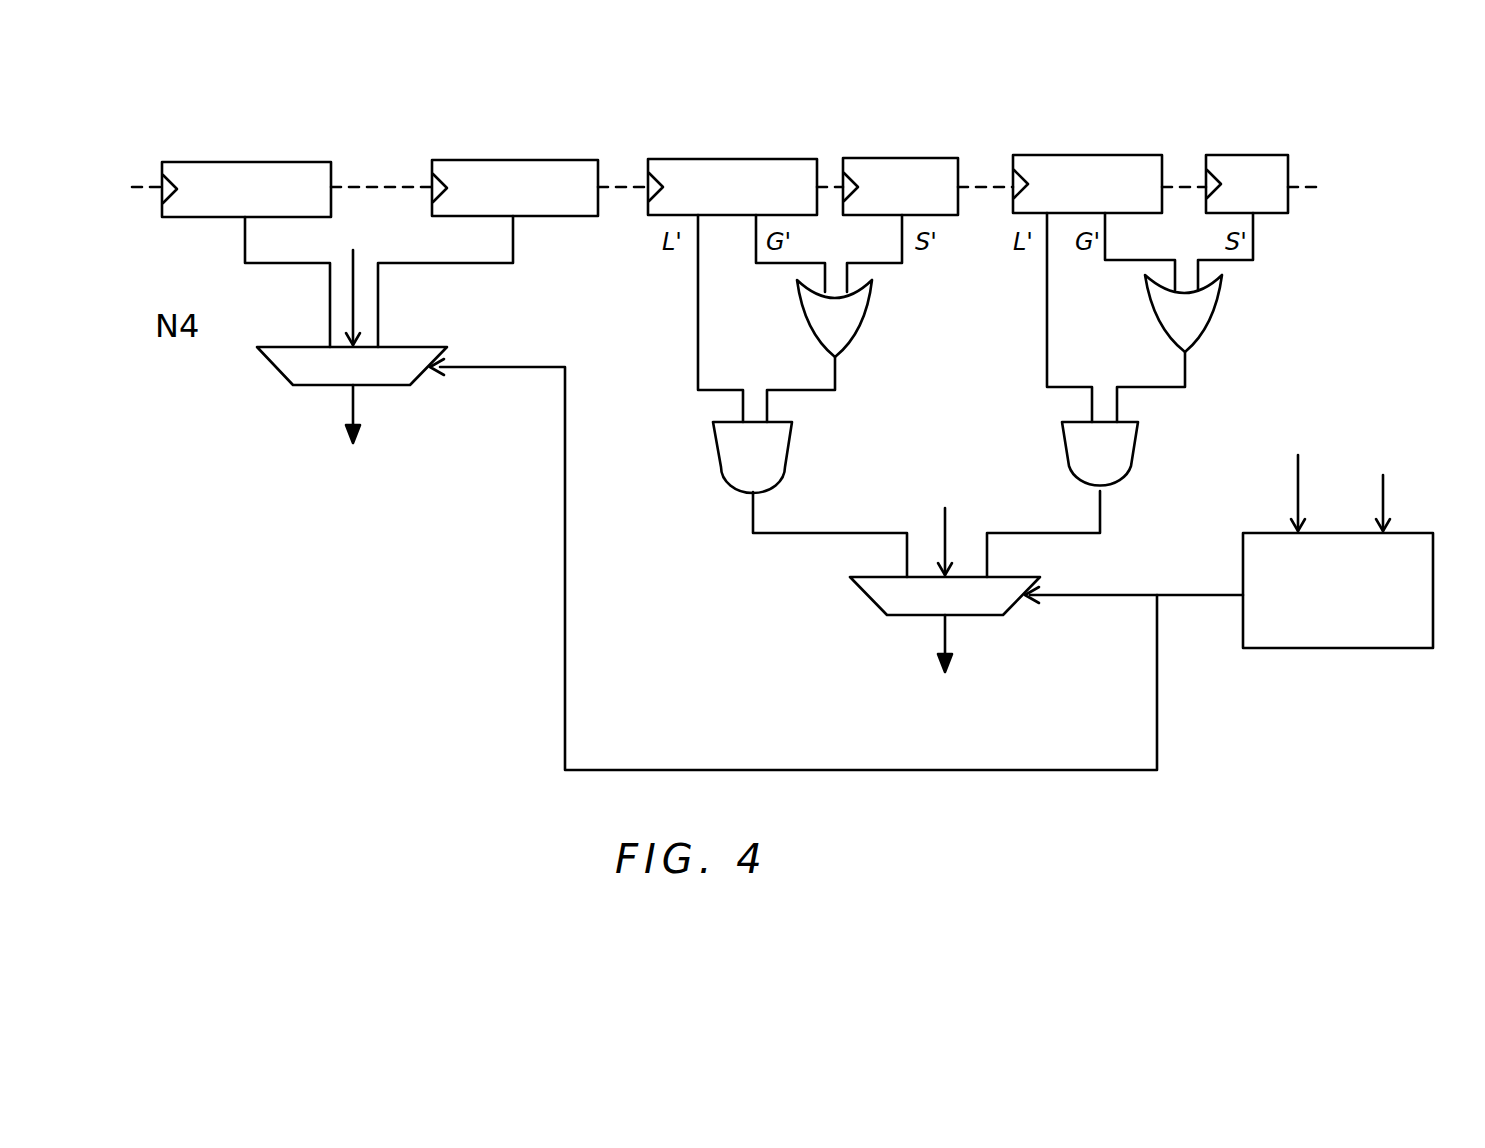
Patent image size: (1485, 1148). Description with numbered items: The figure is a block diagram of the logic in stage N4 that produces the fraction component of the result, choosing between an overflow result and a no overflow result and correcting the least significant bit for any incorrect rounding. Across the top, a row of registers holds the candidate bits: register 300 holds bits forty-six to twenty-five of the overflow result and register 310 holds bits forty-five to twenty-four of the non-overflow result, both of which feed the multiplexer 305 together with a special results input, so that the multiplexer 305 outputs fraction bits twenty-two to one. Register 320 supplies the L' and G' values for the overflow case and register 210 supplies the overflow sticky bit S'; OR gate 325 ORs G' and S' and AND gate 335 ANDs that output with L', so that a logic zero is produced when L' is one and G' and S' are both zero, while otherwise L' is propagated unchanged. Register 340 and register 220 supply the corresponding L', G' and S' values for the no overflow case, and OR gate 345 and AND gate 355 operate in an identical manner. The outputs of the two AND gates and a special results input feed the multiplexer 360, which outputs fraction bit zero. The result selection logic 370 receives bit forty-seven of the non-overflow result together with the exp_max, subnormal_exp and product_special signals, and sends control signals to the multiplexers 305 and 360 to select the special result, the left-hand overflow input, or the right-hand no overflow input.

The register 300 is at (237, 162).
The register 310 is at (500, 160).
The register 320 is at (717, 159).
The register 210 is at (893, 158).
The register 340 is at (1060, 155).
The register 220 is at (1228, 155).
The multiplexer 305 is at (410, 342).
The OR gate 325 is at (858, 316).
The AND gate 335 is at (790, 462).
The OR gate 345 is at (1206, 318).
The AND gate 355 is at (1137, 460).
The multiplexer 360 is at (988, 618).
The result selection logic 370 is at (1352, 654).